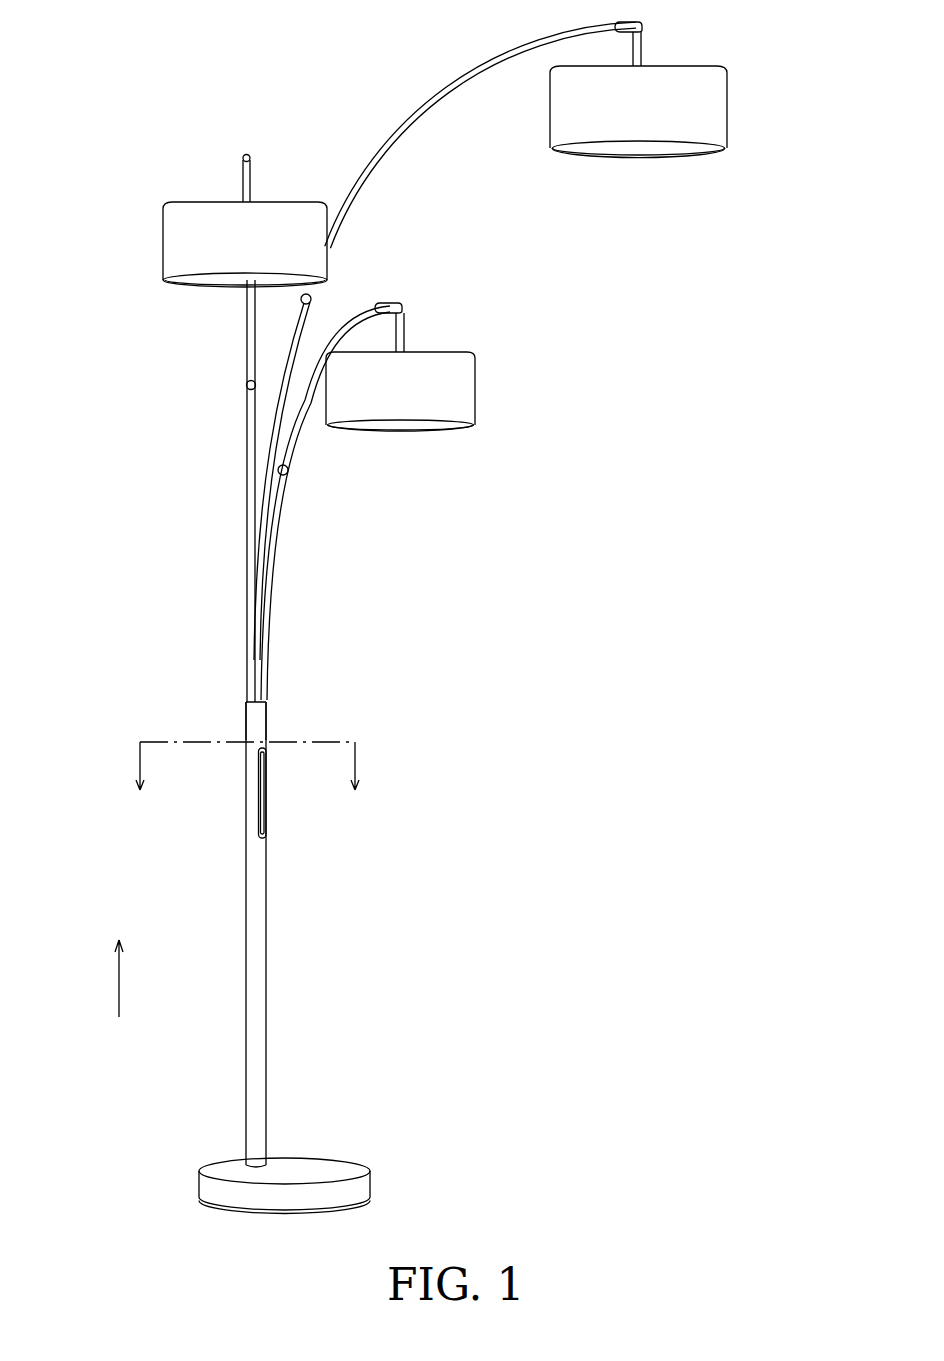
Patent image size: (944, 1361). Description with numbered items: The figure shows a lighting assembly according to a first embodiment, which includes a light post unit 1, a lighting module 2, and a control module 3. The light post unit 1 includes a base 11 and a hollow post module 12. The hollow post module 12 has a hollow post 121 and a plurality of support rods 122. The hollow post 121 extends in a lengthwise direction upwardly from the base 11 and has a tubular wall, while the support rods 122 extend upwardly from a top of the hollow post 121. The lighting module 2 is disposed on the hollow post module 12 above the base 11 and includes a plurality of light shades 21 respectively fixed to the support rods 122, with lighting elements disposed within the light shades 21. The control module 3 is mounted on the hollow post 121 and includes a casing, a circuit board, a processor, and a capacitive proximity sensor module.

The light post unit 1 is at (240, 366).
The base 11 is at (333, 1172).
The hollow post module 12 is at (176, 586).
The hollow post 121 is at (253, 716).
The support rods 122 is at (263, 578).
The lighting module 2 is at (641, 149).
The light shades 21 is at (712, 113).
The control module 3 is at (270, 793).